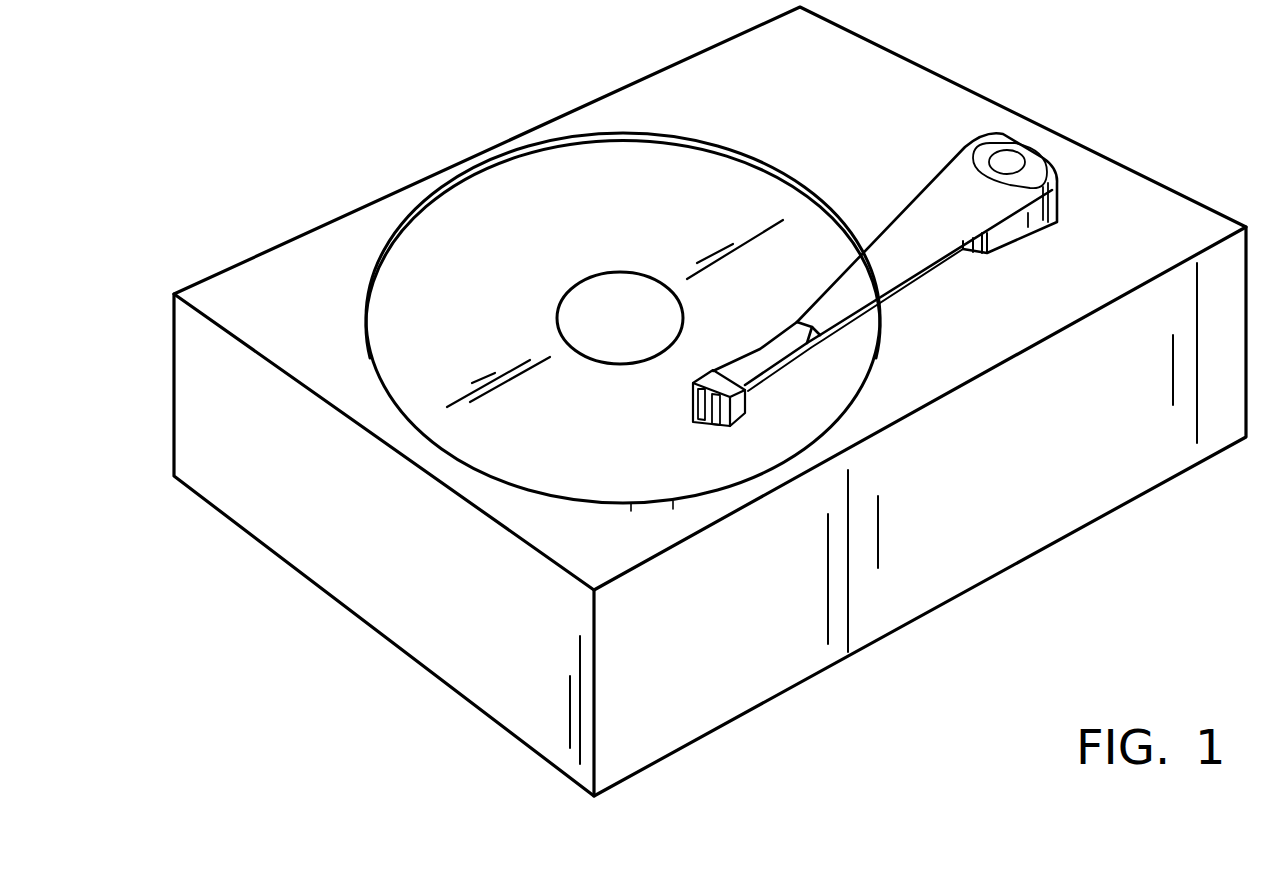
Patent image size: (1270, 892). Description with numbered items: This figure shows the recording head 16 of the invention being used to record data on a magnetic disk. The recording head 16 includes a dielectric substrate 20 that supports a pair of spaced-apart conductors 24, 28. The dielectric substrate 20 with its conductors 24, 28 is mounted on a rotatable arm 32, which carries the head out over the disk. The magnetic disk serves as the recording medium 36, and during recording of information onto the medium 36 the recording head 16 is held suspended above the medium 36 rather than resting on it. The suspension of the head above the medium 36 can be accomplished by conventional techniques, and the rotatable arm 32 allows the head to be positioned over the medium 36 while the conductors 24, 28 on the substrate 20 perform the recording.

The recording head 16 is at (868, 205).
The dielectric substrate 20 is at (748, 401).
The conductor 24 is at (693, 385).
The conductor 28 is at (715, 424).
The rotatable arm 32 is at (933, 271).
The recording medium 36 is at (847, 360).